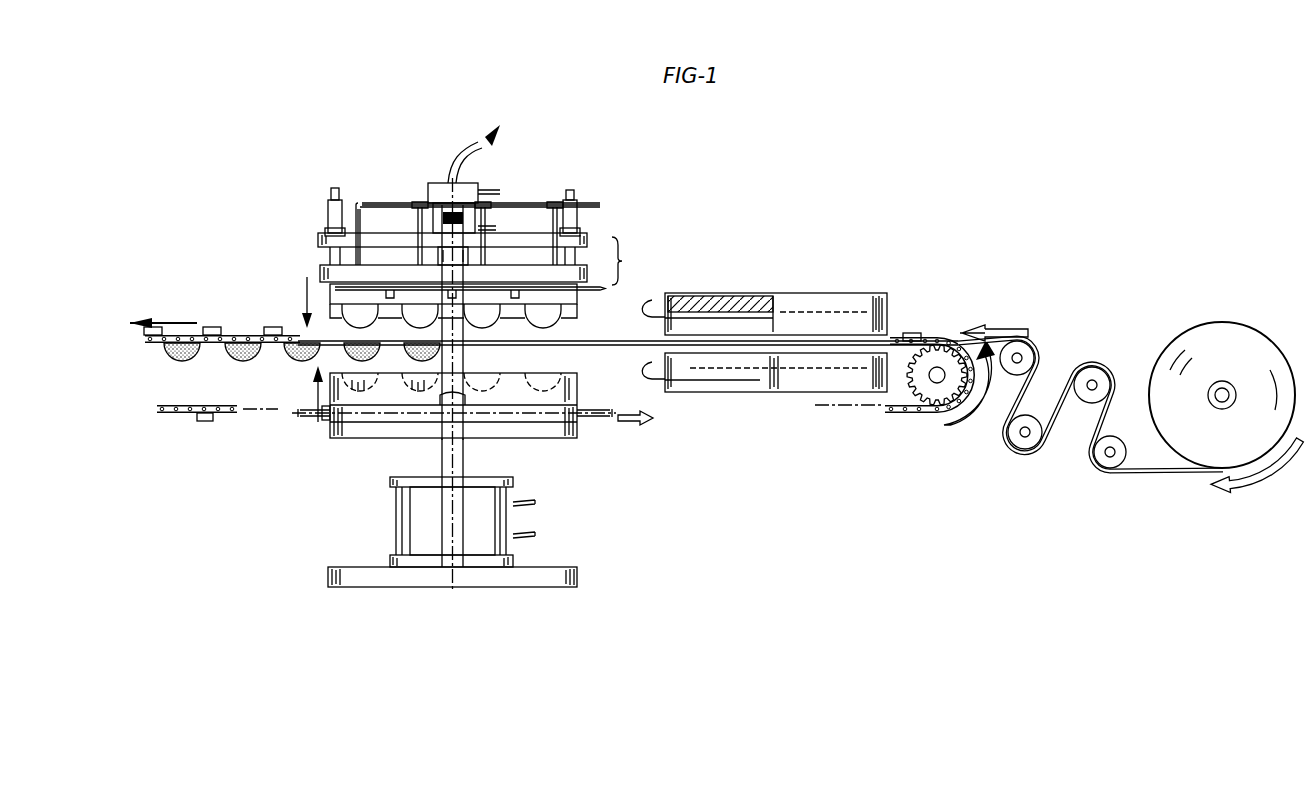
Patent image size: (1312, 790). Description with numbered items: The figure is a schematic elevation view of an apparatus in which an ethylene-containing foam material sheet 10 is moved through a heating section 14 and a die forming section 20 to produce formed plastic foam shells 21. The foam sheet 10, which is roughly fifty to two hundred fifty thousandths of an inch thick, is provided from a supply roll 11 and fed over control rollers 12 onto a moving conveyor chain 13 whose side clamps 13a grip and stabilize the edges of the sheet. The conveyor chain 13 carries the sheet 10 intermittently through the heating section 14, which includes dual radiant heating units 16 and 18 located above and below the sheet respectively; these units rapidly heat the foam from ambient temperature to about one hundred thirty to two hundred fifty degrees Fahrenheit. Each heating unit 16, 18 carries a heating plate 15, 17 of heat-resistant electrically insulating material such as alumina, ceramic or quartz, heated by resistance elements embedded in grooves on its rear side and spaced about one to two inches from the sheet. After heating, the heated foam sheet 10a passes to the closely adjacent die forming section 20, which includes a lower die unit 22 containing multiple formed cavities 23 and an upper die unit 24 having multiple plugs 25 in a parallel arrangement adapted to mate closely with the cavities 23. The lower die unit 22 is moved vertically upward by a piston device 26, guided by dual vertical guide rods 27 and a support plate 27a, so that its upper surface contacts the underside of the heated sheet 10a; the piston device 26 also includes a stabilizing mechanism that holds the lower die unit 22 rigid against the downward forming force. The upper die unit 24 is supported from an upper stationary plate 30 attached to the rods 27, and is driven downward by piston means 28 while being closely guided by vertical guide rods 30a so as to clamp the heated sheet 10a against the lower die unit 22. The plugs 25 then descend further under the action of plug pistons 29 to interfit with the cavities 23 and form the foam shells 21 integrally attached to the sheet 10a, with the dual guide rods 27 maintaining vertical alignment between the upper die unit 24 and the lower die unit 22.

The foam material sheet 10 is at (1174, 474).
The heated foam sheet 10a is at (628, 347).
The supply roll 11 is at (1225, 335).
The control rollers 12 is at (1092, 366).
The conveyor chain 13 is at (205, 421).
The side clamps 13a is at (212, 327).
The heating section 14 is at (892, 284).
The heating plate 15 is at (702, 300).
The radiant heating unit 16 is at (770, 294).
The heating plate 17 is at (716, 382).
The radiant heating unit 18 is at (788, 393).
The die forming section 20 is at (540, 167).
The formed shells 21 is at (193, 360).
The lower die unit 22 is at (577, 438).
The formed cavities 23 is at (420, 390).
The upper die unit 24 is at (322, 273).
The plugs 25 is at (555, 318).
The piston device 26 is at (410, 515).
The vertical guide rods 27 is at (465, 452).
The support plate 27a is at (577, 570).
The piston means 28 is at (448, 186).
The plug pistons 29 is at (318, 241).
The upper stationary plate 30 is at (326, 230).
The vertical guide rods 30a is at (580, 220).